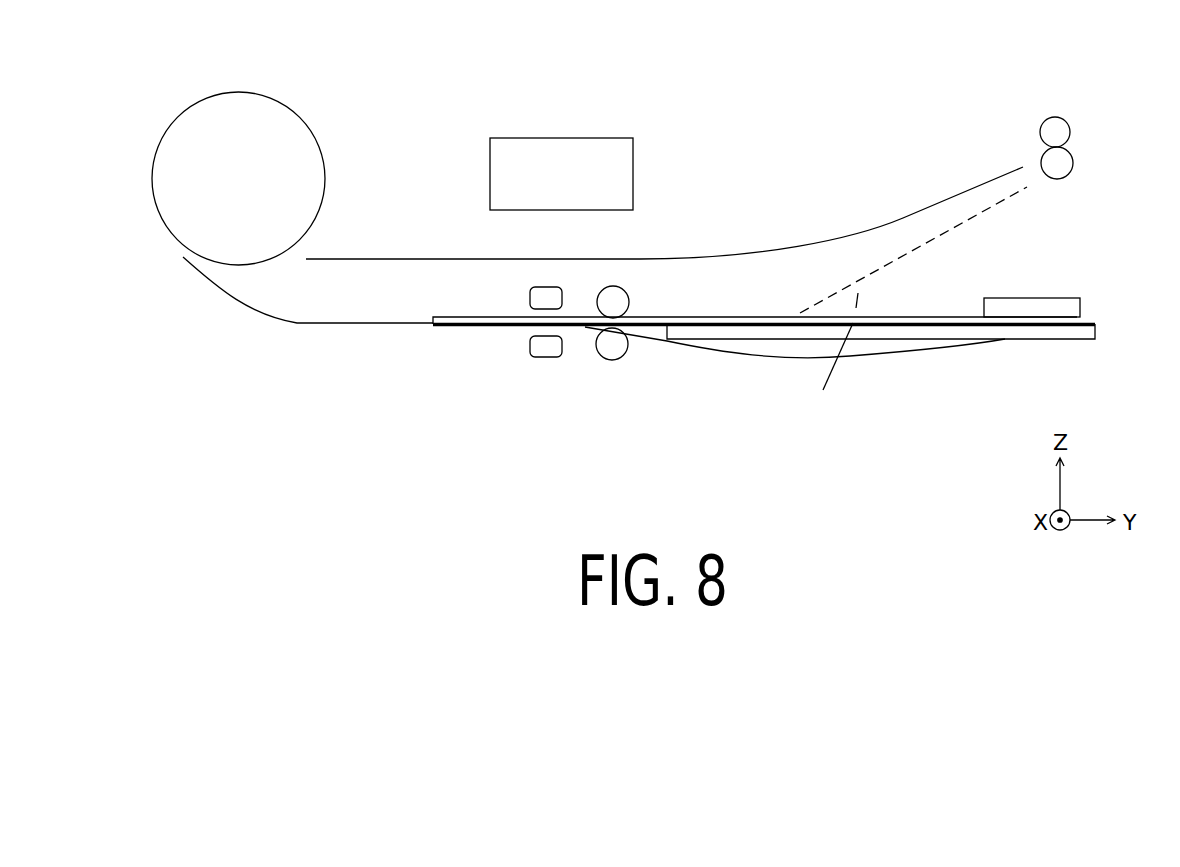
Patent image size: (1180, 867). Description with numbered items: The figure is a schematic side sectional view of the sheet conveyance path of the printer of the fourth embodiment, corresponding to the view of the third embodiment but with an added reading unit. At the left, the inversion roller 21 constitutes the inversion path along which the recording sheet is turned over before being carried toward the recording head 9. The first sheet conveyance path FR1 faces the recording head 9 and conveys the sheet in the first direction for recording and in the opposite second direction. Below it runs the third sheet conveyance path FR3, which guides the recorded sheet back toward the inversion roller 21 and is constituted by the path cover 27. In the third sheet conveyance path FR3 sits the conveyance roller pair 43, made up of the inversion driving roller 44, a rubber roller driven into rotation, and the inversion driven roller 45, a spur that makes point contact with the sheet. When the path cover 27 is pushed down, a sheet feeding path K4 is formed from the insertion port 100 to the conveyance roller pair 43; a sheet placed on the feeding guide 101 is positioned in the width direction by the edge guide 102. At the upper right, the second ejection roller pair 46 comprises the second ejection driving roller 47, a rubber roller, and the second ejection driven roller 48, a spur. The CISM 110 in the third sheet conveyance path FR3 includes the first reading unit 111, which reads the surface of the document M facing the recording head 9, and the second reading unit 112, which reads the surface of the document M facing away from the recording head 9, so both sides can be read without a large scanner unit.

The inversion roller 21 is at (238, 118).
The recording head 9 is at (563, 153).
The first sheet conveyance path FR1 is at (677, 205).
The third sheet conveyance path FR3 is at (697, 297).
The document M is at (945, 317).
The sheet feeding path K4 is at (881, 301).
The second reading unit 112 is at (533, 297).
The first reading unit 111 is at (533, 345).
The CISM 110 is at (553, 424).
The inversion driven roller 45 is at (613, 302).
The inversion driving roller 44 is at (612, 344).
The conveyance roller pair 43 is at (658, 424).
The feeding guide 101 is at (948, 332).
The path cover 27 is at (828, 357).
The insertion port 100 is at (998, 288).
The edge guide 102 is at (1032, 309).
The second ejection driven roller 48 is at (1057, 122).
The second ejection driving roller 47 is at (1073, 160).
The second ejection roller pair 46 is at (1155, 69).